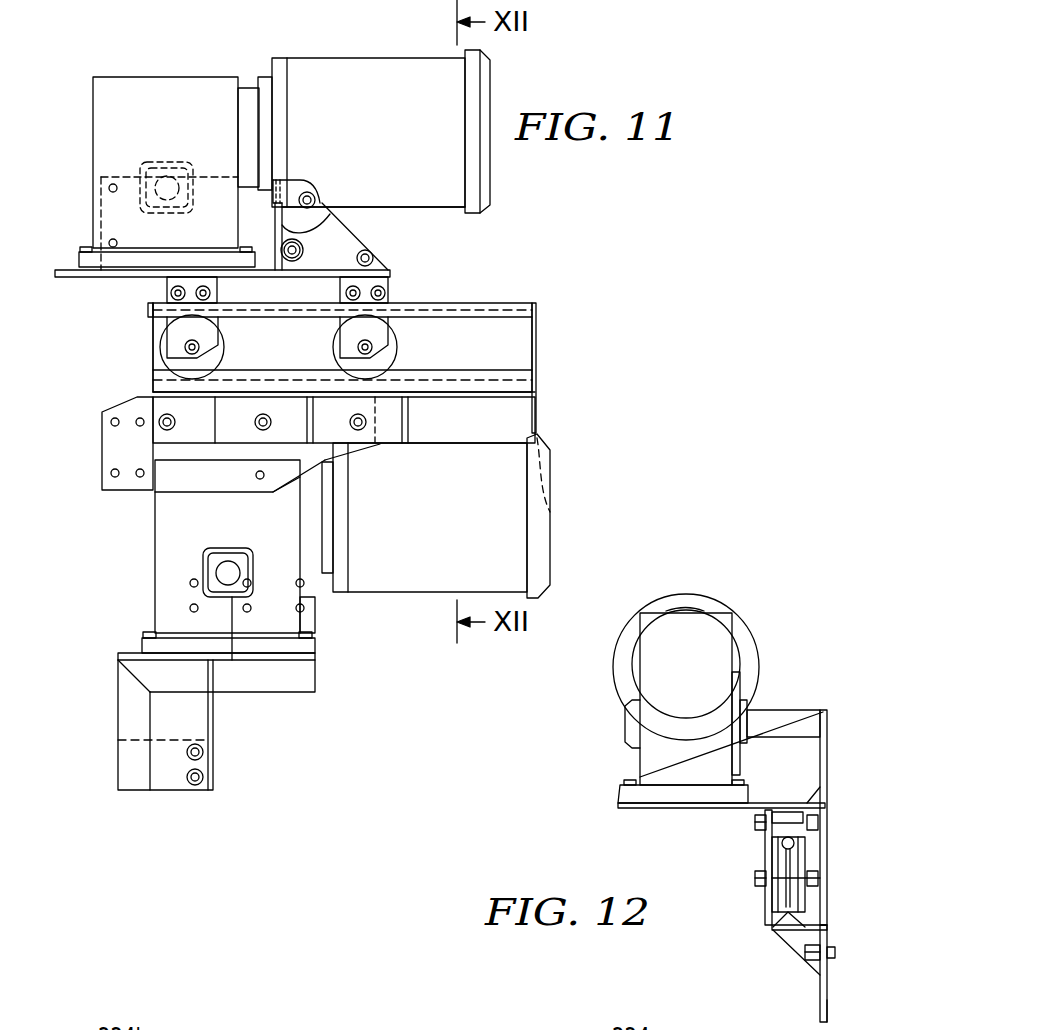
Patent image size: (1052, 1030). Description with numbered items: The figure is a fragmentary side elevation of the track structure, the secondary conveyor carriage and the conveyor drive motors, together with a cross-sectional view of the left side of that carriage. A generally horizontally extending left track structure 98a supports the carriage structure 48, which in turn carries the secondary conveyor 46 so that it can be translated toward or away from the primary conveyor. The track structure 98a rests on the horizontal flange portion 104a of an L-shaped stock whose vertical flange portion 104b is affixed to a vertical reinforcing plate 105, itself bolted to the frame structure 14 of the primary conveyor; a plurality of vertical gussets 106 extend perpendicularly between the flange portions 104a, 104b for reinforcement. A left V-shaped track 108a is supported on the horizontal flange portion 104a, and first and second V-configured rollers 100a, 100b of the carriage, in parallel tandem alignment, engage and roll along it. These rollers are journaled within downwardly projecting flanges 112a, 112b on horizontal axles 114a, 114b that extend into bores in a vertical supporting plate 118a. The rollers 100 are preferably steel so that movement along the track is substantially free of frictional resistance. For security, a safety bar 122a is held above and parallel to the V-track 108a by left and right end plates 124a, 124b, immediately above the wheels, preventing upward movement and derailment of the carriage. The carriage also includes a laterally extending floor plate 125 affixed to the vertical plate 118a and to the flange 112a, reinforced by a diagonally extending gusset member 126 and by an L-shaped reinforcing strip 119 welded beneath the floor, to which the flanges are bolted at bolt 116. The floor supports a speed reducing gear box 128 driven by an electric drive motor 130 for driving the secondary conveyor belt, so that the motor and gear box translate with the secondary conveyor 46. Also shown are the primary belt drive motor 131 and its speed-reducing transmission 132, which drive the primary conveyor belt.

In FIG. 11, the frame structure 14 is at (108, 703).
In FIG. 11, the secondary conveyor 46 is at (498, 245).
In FIG. 11, the carriage structure 48 is at (398, 266).
In FIG. 12, the carriage structure 48 is at (600, 737).
In FIG. 11, the left track structure 98a is at (546, 390).
In FIG. 12, the left track structure 98a is at (832, 918).
In FIG. 11, the rollers 100 is at (551, 512).
In FIG. 11, the first V-configured roller 100a is at (398, 337).
In FIG. 11, the second V-configured roller 100b is at (226, 337).
In FIG. 11, the horizontal flange portion 104a is at (540, 433).
In FIG. 12, the horizontal flange portion 104a is at (772, 935).
In FIG. 12, the vertical flange portion 104b is at (830, 965).
In FIG. 11, the vertical reinforcing plate 105 is at (102, 472).
In FIG. 12, the vertical reinforcing plate 105 is at (822, 1013).
In FIG. 11, the gussets 106 is at (410, 410).
In FIG. 12, the gussets 106 is at (795, 950).
In FIG. 11, the left V-shaped track 108a is at (520, 372).
In FIG. 12, the left V-shaped track 108a is at (805, 912).
In FIG. 12, the downwardly projecting flange 112a is at (763, 862).
In FIG. 11, the downwardly projecting flange 112b is at (172, 332).
In FIG. 11, the horizontal axle 114a is at (373, 352).
In FIG. 12, the horizontal axle 114a is at (772, 890).
In FIG. 11, the horizontal axle 114b is at (200, 351).
In FIG. 12, the bolt 116 is at (752, 825).
In FIG. 11, the vertical supporting plate 118a is at (395, 236).
In FIG. 12, the vertical supporting plate 118a is at (827, 742).
In FIG. 11, the L-shaped reinforcing strip 119 is at (238, 228).
In FIG. 12, the L-shaped reinforcing strip 119 is at (795, 822).
In FIG. 11, the safety bar 122a is at (512, 303).
In FIG. 12, the safety bar 122a is at (807, 838).
In FIG. 11, the left end plate 124a is at (536, 320).
In FIG. 11, the right end plate 124b is at (150, 348).
In FIG. 11, the floor plate 125 is at (70, 277).
In FIG. 12, the floor plate 125 is at (648, 808).
In FIG. 11, the reinforcing gusset member 126 is at (320, 201).
In FIG. 12, the reinforcing gusset member 126 is at (808, 725).
In FIG. 11, the speed reducing gear box 128 is at (167, 77).
In FIG. 11, the electric drive motor 130 is at (375, 58).
In FIG. 12, the electric drive motor 130 is at (688, 596).
In FIG. 11, the primary belt drive motor 131 is at (388, 592).
In FIG. 11, the speed-reducing transmission 132 is at (252, 531).